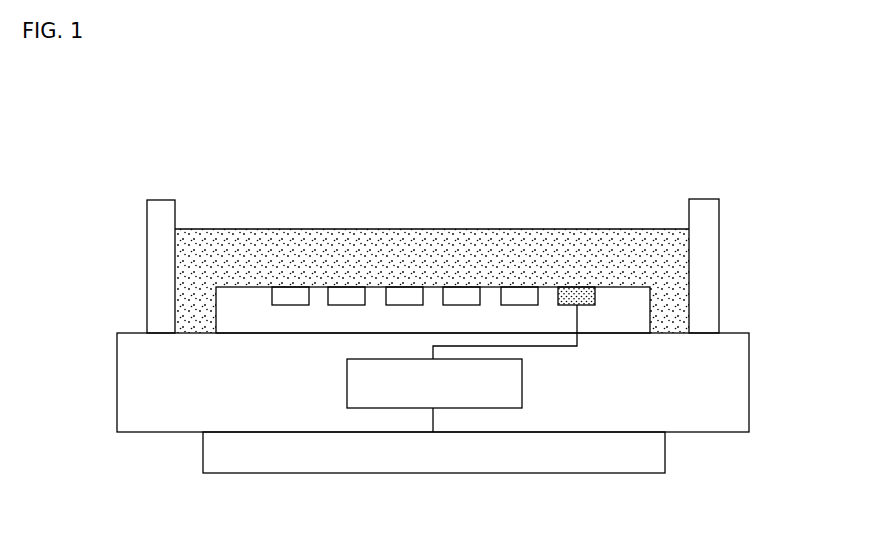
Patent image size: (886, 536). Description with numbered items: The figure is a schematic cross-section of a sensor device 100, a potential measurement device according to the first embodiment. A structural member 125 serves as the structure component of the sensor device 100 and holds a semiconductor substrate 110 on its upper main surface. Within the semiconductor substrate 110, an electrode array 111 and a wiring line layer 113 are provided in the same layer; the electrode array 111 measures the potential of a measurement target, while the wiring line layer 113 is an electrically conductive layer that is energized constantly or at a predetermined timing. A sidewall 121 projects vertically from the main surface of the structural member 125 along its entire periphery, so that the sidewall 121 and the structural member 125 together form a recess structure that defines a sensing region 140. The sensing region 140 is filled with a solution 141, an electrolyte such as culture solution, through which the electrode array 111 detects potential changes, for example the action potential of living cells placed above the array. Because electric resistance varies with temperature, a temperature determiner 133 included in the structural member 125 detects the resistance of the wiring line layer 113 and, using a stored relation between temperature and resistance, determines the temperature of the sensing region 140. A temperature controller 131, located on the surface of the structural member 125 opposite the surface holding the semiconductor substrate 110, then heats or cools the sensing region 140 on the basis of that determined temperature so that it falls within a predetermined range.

The sensor device 100 is at (593, 150).
The semiconductor substrate 110 is at (635, 308).
The electrode array 111 is at (409, 287).
The wiring line layer 113 is at (577, 287).
The sidewall 121 is at (157, 243).
The structural member 125 is at (740, 395).
The temperature controller 131 is at (508, 473).
The temperature determiner 133 is at (372, 408).
The sensing region 140 is at (432, 243).
The solution 141 is at (251, 245).